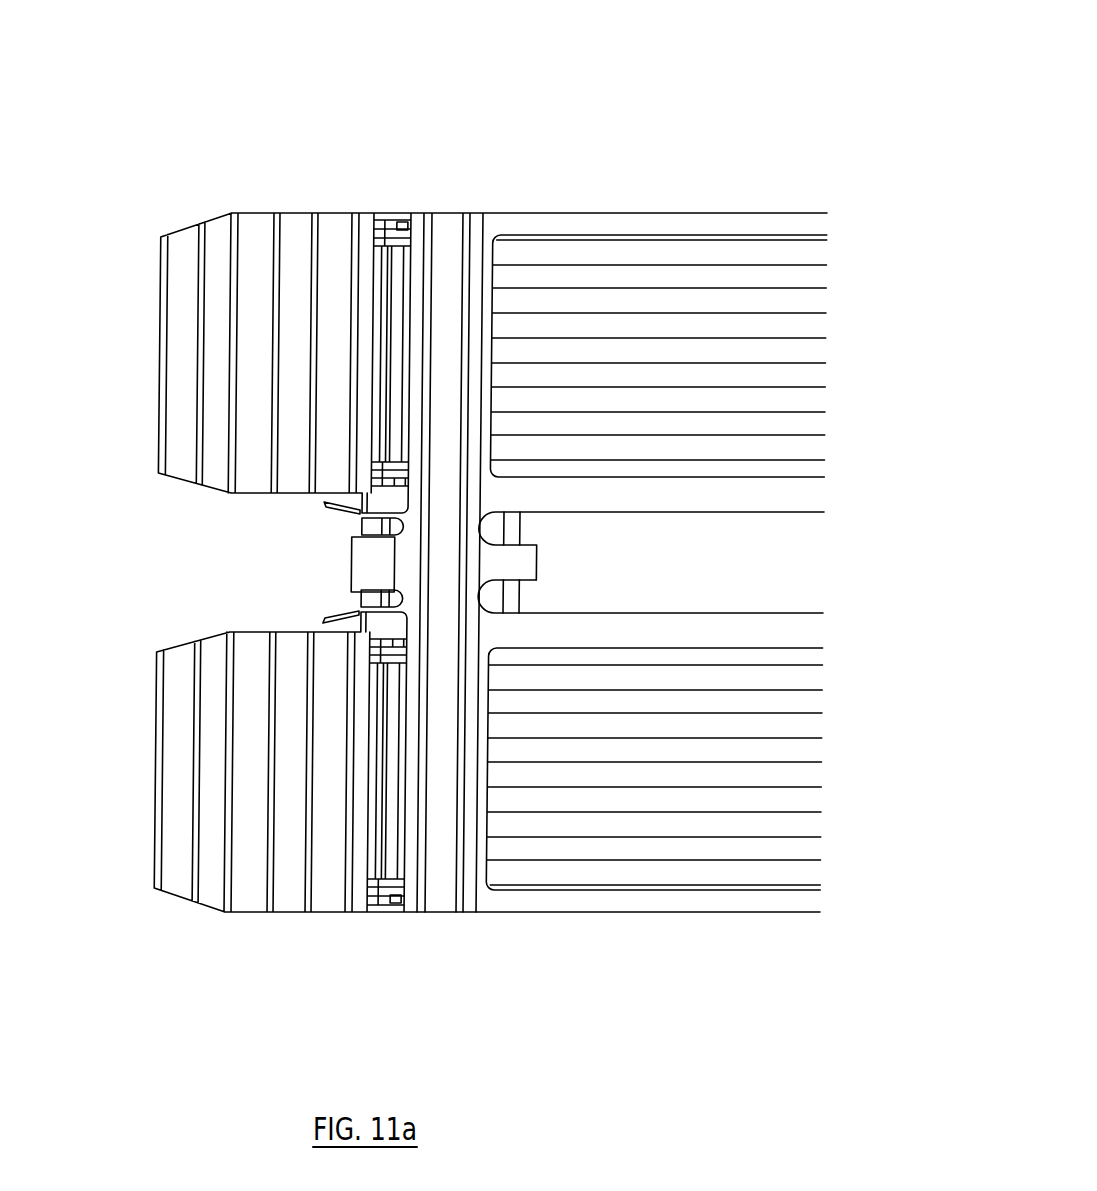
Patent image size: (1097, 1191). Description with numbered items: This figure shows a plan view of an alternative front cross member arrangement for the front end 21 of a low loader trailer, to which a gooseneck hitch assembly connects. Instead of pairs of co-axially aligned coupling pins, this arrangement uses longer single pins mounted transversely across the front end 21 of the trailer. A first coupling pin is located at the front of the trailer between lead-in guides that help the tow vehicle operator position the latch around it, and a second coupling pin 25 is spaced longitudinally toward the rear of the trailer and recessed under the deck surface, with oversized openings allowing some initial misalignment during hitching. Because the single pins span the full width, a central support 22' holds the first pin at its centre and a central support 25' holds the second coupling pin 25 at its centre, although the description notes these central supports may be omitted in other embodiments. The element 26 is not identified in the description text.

The front end of the trailer 21 is at (327, 190).
The central support 22' is at (317, 564).
The second coupling pin 25 is at (593, 750).
The central support 25' is at (651, 562).
The fin stack 26 is at (526, 246).